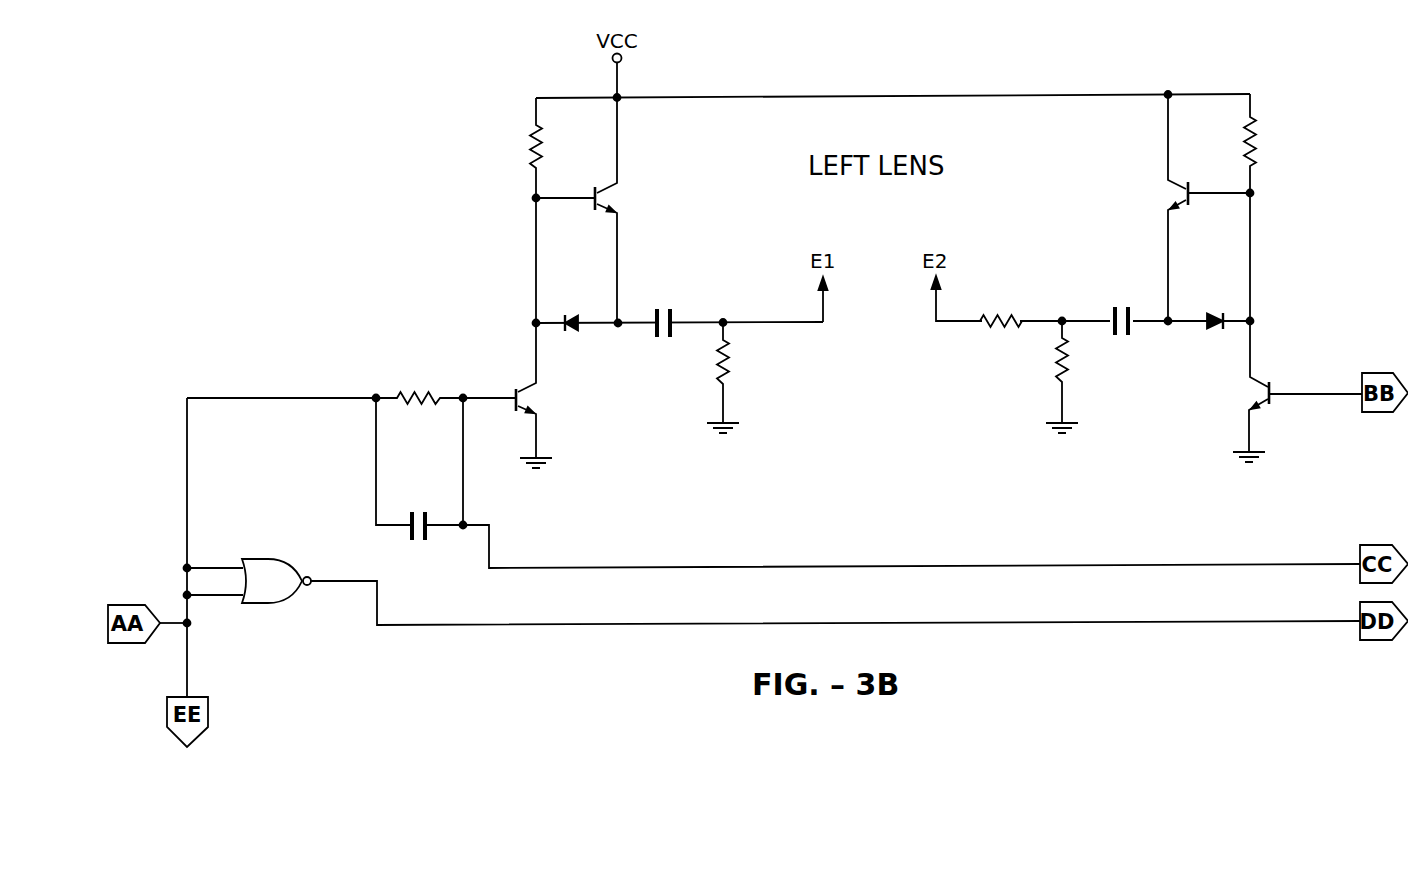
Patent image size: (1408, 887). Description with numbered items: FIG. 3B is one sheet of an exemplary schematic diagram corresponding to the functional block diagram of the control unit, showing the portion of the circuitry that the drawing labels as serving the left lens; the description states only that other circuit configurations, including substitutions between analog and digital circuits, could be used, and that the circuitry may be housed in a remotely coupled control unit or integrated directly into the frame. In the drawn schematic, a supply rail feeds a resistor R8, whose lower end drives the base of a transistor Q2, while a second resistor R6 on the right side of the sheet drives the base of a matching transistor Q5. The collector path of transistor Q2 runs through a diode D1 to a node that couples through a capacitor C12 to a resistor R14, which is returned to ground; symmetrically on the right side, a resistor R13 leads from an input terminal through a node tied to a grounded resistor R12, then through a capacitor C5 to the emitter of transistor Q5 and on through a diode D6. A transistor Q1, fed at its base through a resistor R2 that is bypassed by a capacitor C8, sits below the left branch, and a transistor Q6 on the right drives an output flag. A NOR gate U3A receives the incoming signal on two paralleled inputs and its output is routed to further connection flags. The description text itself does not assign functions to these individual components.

The resistor 33K R8 is at (512, 150).
The transistor BCX-70K Q2 is at (625, 210).
The diode DL4148 D1 is at (575, 337).
The capacitor 1UF 50V NP C12 is at (668, 346).
The resistor 100K R14 is at (749, 377).
The transistor BCX-70K Q1 is at (575, 395).
The resistor 33K R2 is at (351, 400).
The capacitor 10PF C8 is at (421, 485).
The NOR gate CD4001BCM U3A is at (772, 584).
The resistor 33K R6 is at (1275, 145).
The transistor BCX-70K Q5 is at (1157, 207).
The resistor 1K R13 is at (1001, 296).
The resistor 100K R12 is at (1037, 377).
The capacitor 1UF 50V NP C5 is at (1117, 344).
The diode DL4148 D6 is at (1212, 334).
The transistor BCX-70K Q6 is at (1297, 391).